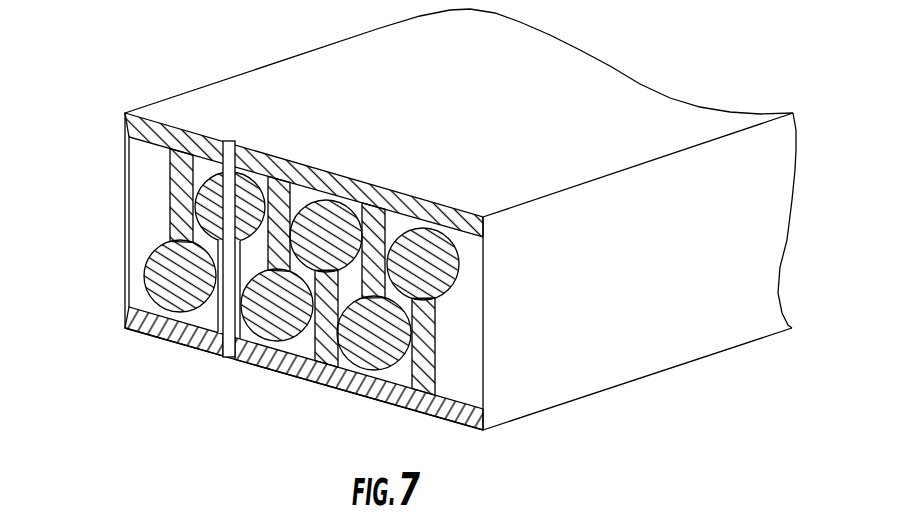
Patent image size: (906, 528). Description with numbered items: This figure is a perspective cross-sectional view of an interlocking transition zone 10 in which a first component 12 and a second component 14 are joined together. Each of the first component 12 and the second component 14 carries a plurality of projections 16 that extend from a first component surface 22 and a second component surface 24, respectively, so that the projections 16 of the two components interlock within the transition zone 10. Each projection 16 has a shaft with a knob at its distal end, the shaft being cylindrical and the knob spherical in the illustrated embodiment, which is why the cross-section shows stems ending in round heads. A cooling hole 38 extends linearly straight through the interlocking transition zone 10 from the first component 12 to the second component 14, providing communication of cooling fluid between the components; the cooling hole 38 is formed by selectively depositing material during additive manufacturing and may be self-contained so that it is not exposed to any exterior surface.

The interlocking transition zone 10 is at (746, 56).
The first component 12 is at (362, 385).
The second component 14 is at (426, 208).
The projection 16 is at (438, 261).
The first component surface 22 is at (141, 308).
The second component surface 24 is at (145, 137).
The cooling hole 38 is at (230, 141).